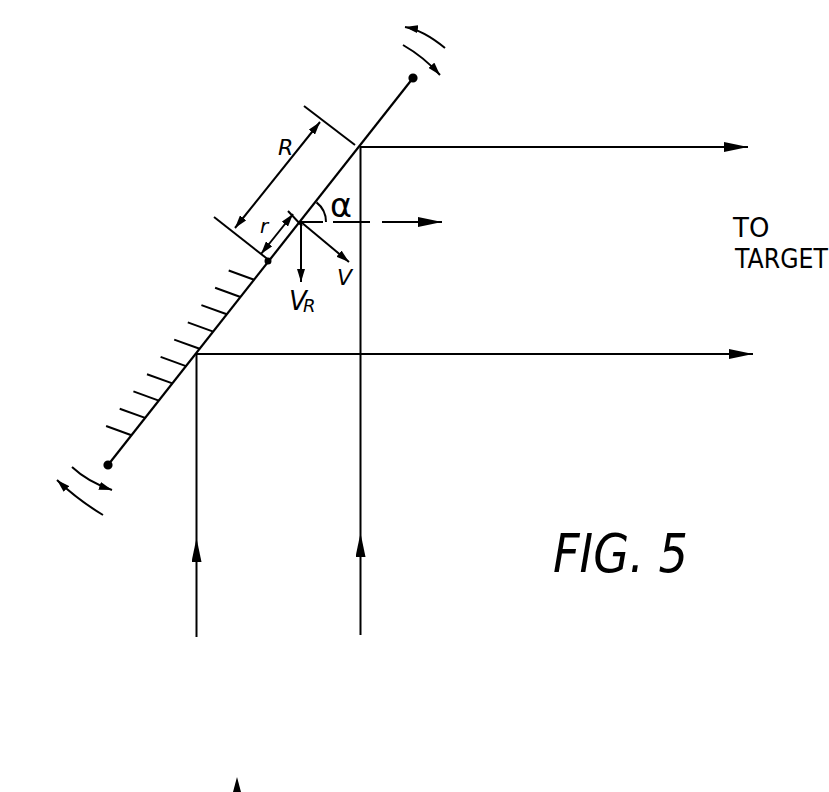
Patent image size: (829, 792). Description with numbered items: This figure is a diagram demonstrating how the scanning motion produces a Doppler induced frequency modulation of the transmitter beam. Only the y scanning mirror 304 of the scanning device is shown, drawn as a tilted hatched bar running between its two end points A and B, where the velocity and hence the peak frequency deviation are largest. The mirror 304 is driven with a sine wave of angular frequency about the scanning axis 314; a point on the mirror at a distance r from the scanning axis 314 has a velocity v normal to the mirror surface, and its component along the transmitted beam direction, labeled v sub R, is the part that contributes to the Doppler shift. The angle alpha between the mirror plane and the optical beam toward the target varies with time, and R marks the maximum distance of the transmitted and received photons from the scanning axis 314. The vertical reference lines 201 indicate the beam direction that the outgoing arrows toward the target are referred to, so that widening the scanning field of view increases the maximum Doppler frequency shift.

The reference direction line 201 is at (298, 620).
The scanning mirror 304 is at (146, 417).
The scanning axis 314 is at (266, 260).